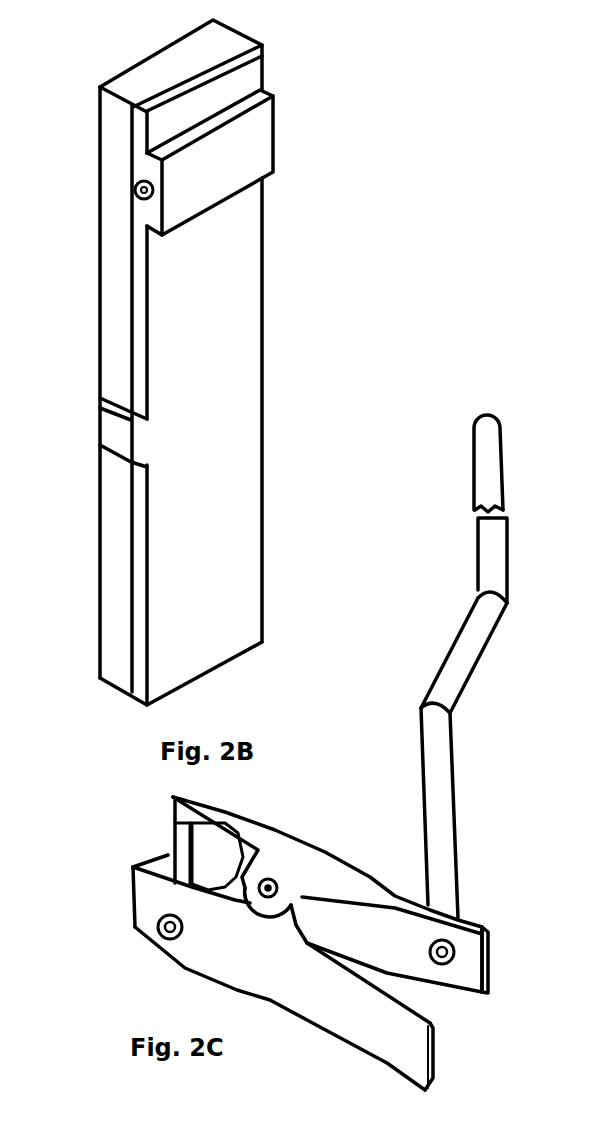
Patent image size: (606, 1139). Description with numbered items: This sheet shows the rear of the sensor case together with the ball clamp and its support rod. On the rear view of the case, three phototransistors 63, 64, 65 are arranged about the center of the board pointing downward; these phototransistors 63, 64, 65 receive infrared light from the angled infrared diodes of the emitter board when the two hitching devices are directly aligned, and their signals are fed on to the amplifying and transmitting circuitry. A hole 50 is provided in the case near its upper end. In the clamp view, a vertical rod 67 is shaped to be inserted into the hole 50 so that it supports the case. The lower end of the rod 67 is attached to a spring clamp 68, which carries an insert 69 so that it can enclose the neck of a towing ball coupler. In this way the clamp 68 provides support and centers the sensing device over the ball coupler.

In FIG. 2B, the hole 50 is at (134, 188).
In FIG. 2B, the phototransistor 63 is at (128, 373).
In FIG. 2B, the phototransistor 64 is at (125, 437).
In FIG. 2B, the phototransistor 65 is at (133, 484).
In FIG. 2C, the vertical rod 67 is at (478, 550).
In FIG. 2C, the spring clamp 68 is at (308, 848).
In FIG. 2C, the insert 69 is at (168, 867).